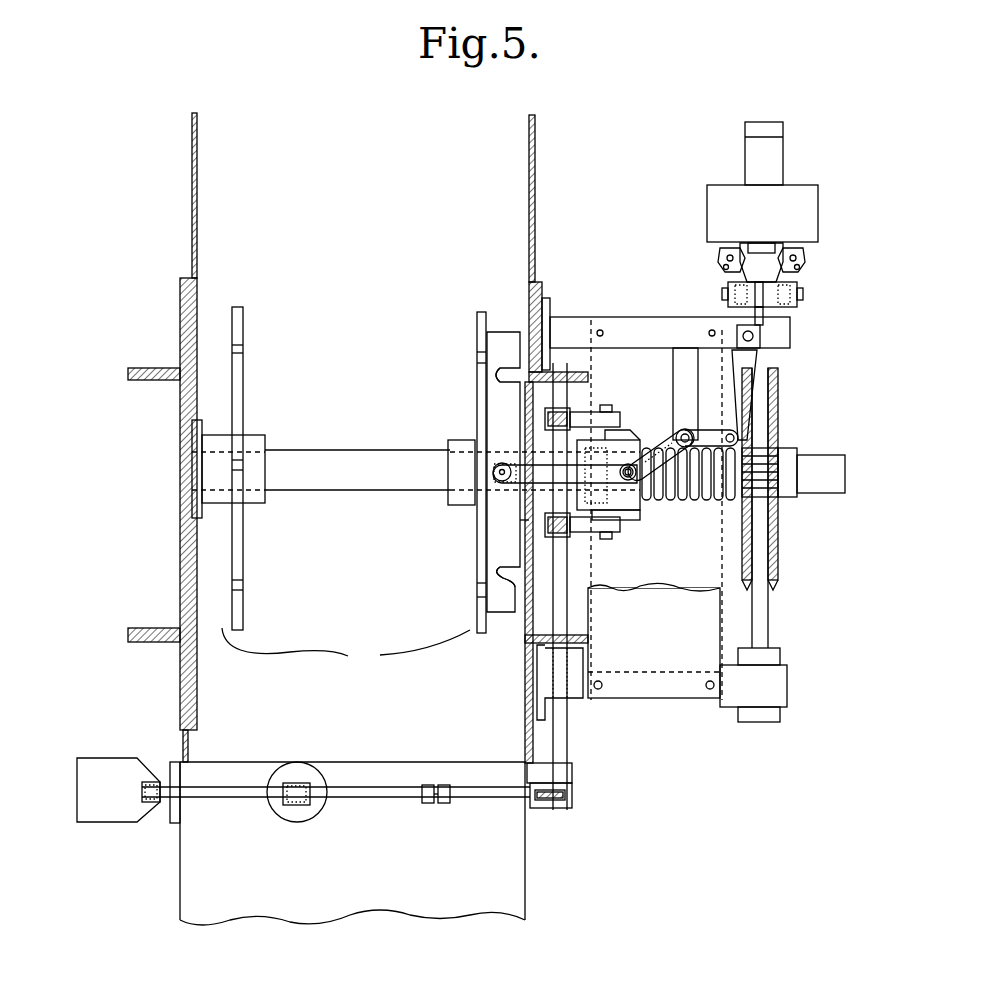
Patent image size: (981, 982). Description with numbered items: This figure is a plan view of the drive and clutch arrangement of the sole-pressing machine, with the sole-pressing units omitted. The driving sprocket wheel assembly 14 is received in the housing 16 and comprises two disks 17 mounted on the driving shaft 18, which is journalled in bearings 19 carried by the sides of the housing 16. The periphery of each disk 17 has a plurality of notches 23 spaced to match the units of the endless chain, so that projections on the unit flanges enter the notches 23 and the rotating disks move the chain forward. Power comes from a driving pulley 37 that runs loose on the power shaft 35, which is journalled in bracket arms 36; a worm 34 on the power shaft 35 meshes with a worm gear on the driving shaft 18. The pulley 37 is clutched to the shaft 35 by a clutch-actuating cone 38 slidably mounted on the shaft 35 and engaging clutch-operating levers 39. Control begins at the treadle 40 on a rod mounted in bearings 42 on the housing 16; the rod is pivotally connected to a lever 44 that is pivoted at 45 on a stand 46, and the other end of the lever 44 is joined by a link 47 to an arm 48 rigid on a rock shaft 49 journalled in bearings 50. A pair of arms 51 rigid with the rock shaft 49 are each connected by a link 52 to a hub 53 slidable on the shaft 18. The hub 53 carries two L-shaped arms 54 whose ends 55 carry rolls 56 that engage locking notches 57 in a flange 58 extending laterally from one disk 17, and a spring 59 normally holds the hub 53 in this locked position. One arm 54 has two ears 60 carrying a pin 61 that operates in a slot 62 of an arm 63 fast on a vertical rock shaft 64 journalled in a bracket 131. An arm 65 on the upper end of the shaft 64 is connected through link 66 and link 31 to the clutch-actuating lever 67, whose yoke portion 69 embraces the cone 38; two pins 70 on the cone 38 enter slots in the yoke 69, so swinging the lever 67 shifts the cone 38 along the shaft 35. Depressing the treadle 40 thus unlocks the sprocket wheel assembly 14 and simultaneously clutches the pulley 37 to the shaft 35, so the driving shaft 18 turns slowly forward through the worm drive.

The sprocket wheel assembly 14 is at (346, 648).
The housing 16 is at (192, 236).
The disk 17 is at (243, 388).
The driving shaft 18 is at (357, 452).
The bearing 19 is at (215, 436).
The notch 23 is at (243, 350).
The link 31 is at (763, 330).
The worm 34 is at (780, 460).
The power shaft 35 is at (767, 614).
The bracket arm 36 is at (700, 325).
The driving pulley 37 is at (707, 201).
The clutch-actuating cone 38 is at (783, 276).
The clutch-operating lever 39 is at (722, 270).
The treadle 40 is at (120, 822).
The bearing 42 is at (175, 762).
The lever 44 is at (242, 798).
The pivot 45 is at (298, 805).
The stand 46 is at (312, 800).
The link 47 is at (480, 800).
The arm 48 is at (572, 796).
The rock shaft 49 is at (575, 716).
The bearing 50 is at (572, 772).
The arm 51 is at (572, 410).
The link 52 is at (600, 418).
The hub 53 is at (640, 498).
The L-shaped arm 54 is at (612, 495).
The arm end 55 is at (515, 478).
The roll 56 is at (498, 480).
The locking notch 57 is at (508, 368).
The flange 58 is at (500, 332).
The spring 59 is at (700, 504).
The ear 60 is at (630, 463).
The pin 61 is at (626, 466).
The slot 62 is at (652, 452).
The arm 63 is at (661, 439).
The vertical rock shaft 64 is at (686, 429).
The arm 65 is at (717, 432).
The link 66 is at (760, 398).
The clutch-actuating lever 67 is at (765, 312).
The yoke portion 69 is at (728, 290).
The pin 70 is at (722, 296).
The bracket 131 is at (680, 366).